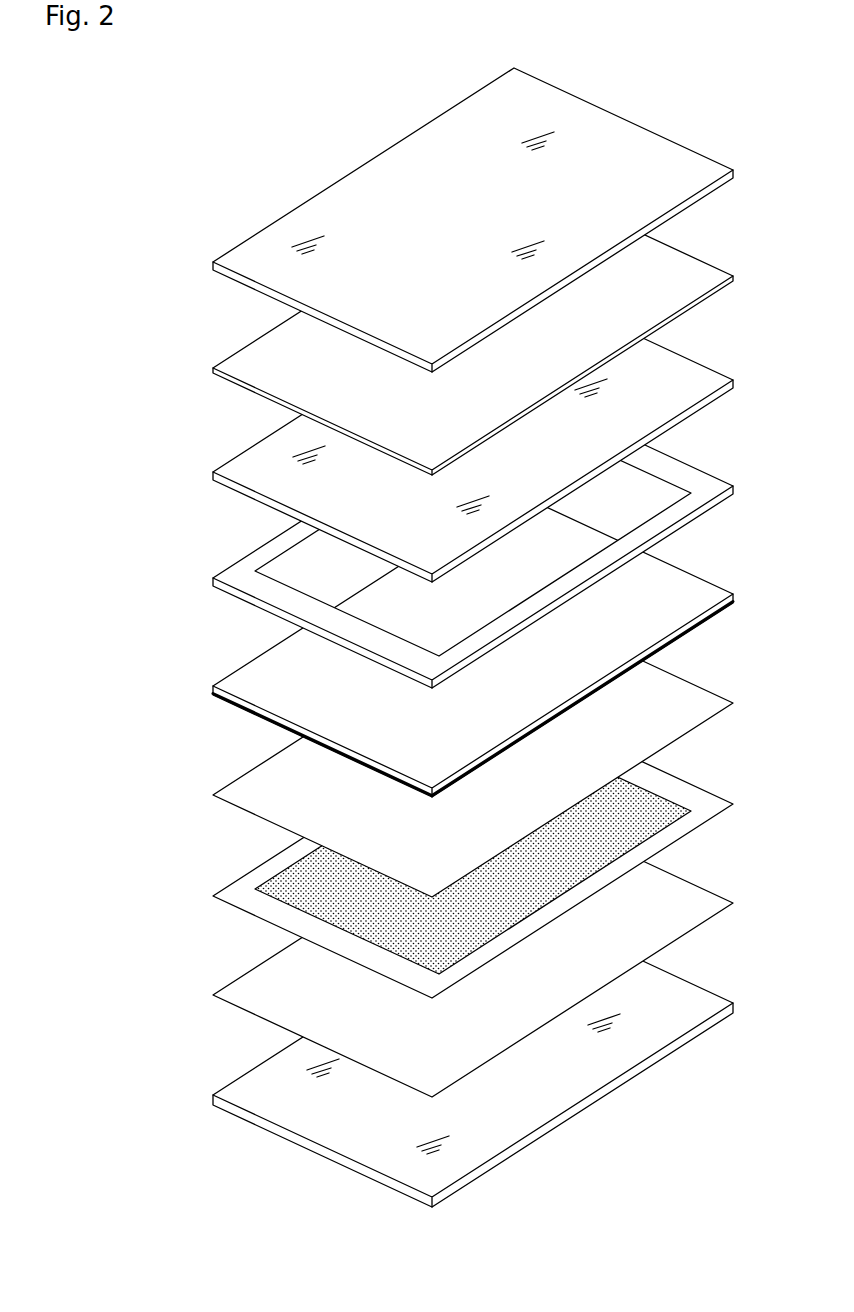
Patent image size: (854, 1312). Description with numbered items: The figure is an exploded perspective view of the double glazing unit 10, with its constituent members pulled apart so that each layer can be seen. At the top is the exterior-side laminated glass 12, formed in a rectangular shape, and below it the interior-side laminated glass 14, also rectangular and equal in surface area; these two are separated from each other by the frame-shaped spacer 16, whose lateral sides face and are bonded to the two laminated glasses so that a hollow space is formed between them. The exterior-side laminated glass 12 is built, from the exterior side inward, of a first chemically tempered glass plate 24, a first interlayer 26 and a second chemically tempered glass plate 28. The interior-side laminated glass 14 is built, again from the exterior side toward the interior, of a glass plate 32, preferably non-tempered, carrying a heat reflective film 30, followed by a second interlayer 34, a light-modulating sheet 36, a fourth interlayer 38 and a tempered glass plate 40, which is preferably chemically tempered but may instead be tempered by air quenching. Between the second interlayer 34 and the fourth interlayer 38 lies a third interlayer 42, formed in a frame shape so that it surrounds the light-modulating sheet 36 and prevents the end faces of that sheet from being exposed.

The double glazing unit 10 is at (705, 121).
The exterior-side laminated glass 12 is at (190, 253).
The interior-side laminated glass 14 is at (190, 685).
The spacer 16 is at (724, 477).
The first chemically tempered glass plate 24 is at (713, 169).
The first interlayer 26 is at (713, 275).
The second chemically tempered glass plate 28 is at (713, 380).
The heat reflective film 30 is at (728, 609).
The glass plate 32 is at (713, 592).
The second interlayer 34 is at (713, 700).
The light-modulating sheet 36 is at (480, 850).
The fourth interlayer 38 is at (713, 900).
The tempered glass plate 40 is at (713, 1000).
The third interlayer 42 is at (713, 801).